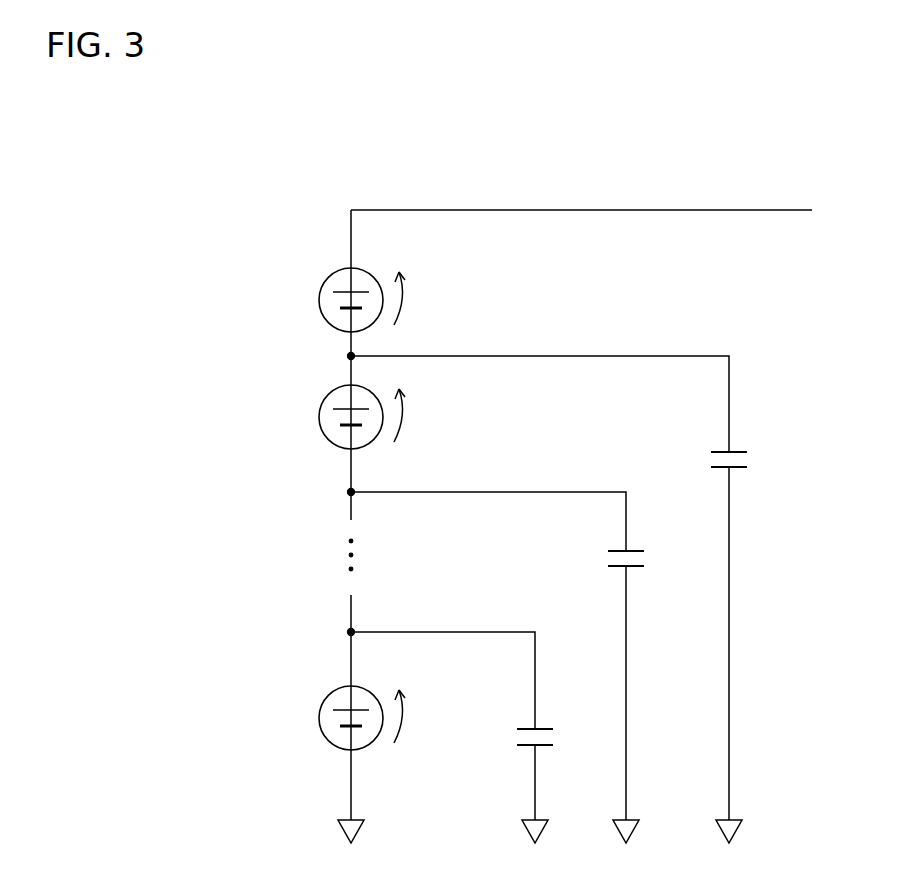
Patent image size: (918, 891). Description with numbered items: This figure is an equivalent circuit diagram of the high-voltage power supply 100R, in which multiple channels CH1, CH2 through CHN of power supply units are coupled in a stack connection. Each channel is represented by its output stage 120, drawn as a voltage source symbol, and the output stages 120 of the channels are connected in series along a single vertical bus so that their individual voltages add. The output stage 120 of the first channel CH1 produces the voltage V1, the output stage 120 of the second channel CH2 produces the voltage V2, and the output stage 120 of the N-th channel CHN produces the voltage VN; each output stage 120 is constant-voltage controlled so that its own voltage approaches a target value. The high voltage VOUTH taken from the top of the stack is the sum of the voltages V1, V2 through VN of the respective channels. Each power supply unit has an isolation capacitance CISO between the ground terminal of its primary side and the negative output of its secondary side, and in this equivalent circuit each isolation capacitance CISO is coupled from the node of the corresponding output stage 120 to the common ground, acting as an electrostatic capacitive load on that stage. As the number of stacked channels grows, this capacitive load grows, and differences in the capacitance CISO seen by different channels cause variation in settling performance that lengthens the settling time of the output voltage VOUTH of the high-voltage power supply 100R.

The high-voltage power supply 100R is at (850, 104).
The output stage 120 is at (322, 318).
The output voltage VOUTH is at (808, 196).
The isolation capacitance CISO is at (549, 588).
The first channel CH1 is at (218, 290).
The second channel CH2 is at (218, 429).
The N-th channel CHN is at (219, 723).
The output voltage of first channel V1 is at (417, 298).
The output voltage of second channel V2 is at (417, 415).
The output voltage of N-th channel VN is at (417, 716).